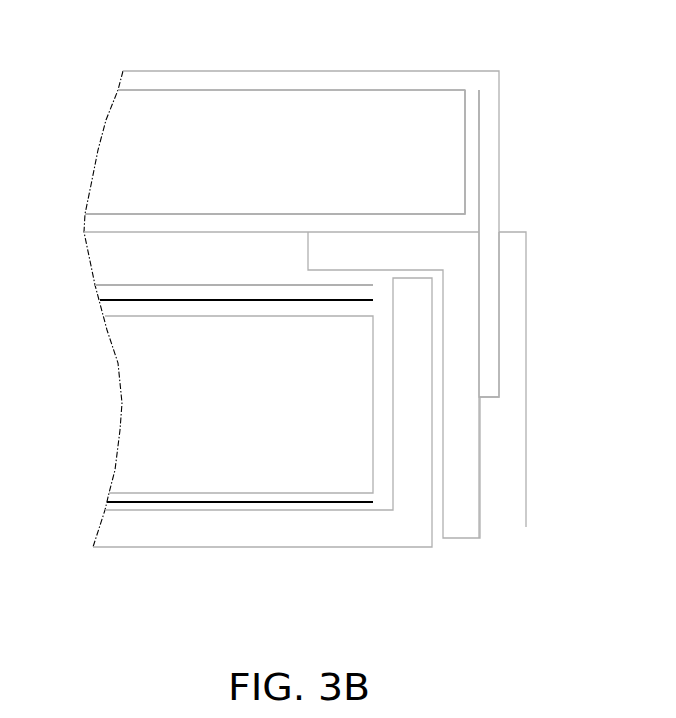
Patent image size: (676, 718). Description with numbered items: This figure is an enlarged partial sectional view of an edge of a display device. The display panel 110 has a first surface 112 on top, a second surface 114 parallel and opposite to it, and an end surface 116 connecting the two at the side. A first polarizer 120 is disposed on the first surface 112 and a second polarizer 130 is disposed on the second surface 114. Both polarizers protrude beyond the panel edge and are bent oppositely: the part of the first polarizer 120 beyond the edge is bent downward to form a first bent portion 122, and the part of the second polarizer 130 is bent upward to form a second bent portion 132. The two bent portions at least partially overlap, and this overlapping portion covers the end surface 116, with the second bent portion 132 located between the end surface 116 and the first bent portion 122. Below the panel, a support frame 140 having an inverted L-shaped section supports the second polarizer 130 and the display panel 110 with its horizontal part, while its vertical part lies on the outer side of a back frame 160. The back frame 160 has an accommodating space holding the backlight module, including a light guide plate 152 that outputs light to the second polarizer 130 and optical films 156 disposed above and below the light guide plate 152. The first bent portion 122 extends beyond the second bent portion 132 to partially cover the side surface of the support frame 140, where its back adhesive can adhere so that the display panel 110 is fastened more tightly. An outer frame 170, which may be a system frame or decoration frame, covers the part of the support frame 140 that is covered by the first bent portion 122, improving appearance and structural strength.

The display panel 110 is at (203, 116).
The first surface 112 is at (152, 90).
The second surface 114 is at (117, 215).
The end surface 116 is at (482, 108).
The first polarizer 120 is at (338, 80).
The first bent portion 122 is at (491, 200).
The second polarizer 130 is at (265, 218).
The second bent portion 132 is at (470, 145).
The support frame 140 is at (460, 495).
The light guide plate 152 is at (225, 458).
The optical films 156 is at (105, 286).
The back frame 160 is at (380, 547).
The outer frame 170 is at (512, 425).